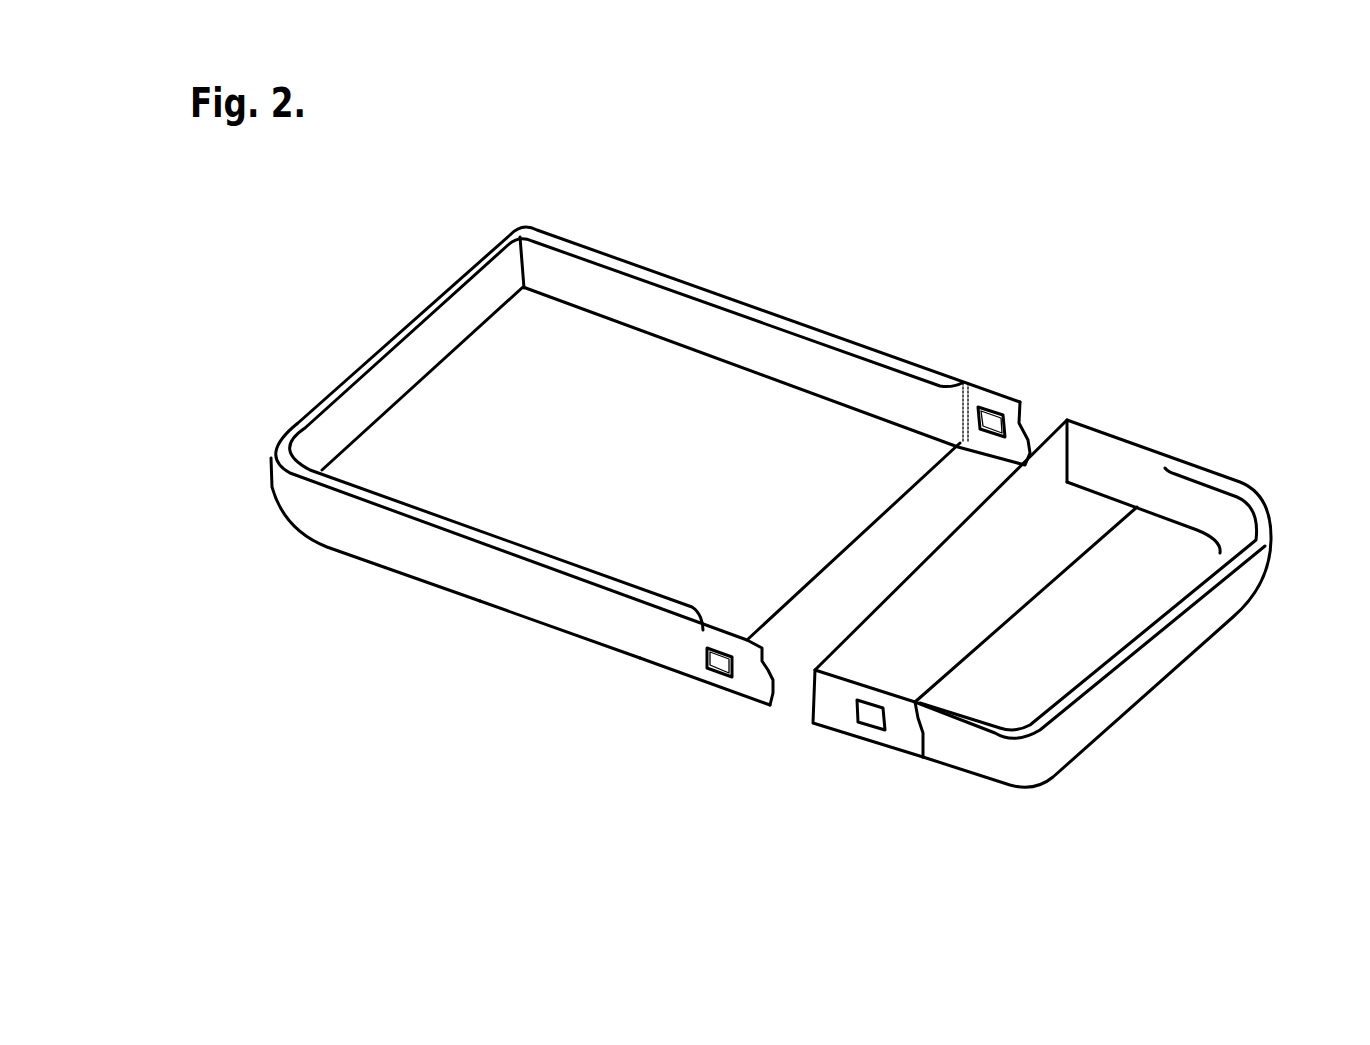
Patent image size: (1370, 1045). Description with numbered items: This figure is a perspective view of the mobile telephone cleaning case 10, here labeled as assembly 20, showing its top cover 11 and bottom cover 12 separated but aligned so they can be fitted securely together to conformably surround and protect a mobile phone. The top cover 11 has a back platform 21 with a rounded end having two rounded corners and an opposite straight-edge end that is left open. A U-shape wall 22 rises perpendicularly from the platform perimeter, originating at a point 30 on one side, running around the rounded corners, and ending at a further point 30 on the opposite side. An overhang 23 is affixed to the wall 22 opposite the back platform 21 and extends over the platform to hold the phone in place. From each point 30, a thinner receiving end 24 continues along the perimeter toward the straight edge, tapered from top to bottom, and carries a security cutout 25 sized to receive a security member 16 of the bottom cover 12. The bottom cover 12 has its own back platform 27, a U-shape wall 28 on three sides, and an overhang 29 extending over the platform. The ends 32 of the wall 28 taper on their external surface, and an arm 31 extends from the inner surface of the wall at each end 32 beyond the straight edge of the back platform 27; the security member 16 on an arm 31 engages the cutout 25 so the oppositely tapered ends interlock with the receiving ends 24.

The protective case 10 is at (845, 247).
The top cover 11 is at (1029, 388).
The bottom cover 12 is at (1281, 477).
The security member 16 is at (863, 725).
The case assembly 20 is at (300, 161).
The back platform 21 is at (930, 555).
The U-shape wall 22 is at (330, 547).
The overhang 23 is at (473, 545).
The receiving end 24 is at (710, 687).
The security cutout 25 is at (722, 653).
The back platform 27 is at (992, 630).
The U-shape wall 28 is at (1053, 777).
The overhang 29 is at (1163, 620).
The point 30 is at (958, 385).
The tapered end 31 is at (812, 720).
The end 32 is at (920, 752).